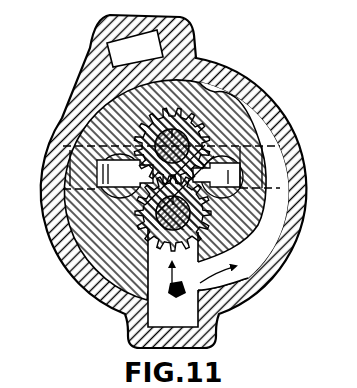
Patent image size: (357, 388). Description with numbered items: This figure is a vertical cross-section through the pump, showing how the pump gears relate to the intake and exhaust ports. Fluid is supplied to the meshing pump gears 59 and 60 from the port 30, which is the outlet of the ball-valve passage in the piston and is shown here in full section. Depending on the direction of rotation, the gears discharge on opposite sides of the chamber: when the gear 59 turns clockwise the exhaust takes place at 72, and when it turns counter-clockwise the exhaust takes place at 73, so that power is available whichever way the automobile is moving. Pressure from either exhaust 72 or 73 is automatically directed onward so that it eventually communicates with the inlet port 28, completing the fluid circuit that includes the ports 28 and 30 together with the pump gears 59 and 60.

The inlet port 28 is at (135, 48).
The port 30 is at (278, 58).
The pump gear 59 is at (107, 290).
The pump gear 60 is at (170, 110).
The exhaust port 72 is at (55, 242).
The exhaust port 73 is at (227, 178).